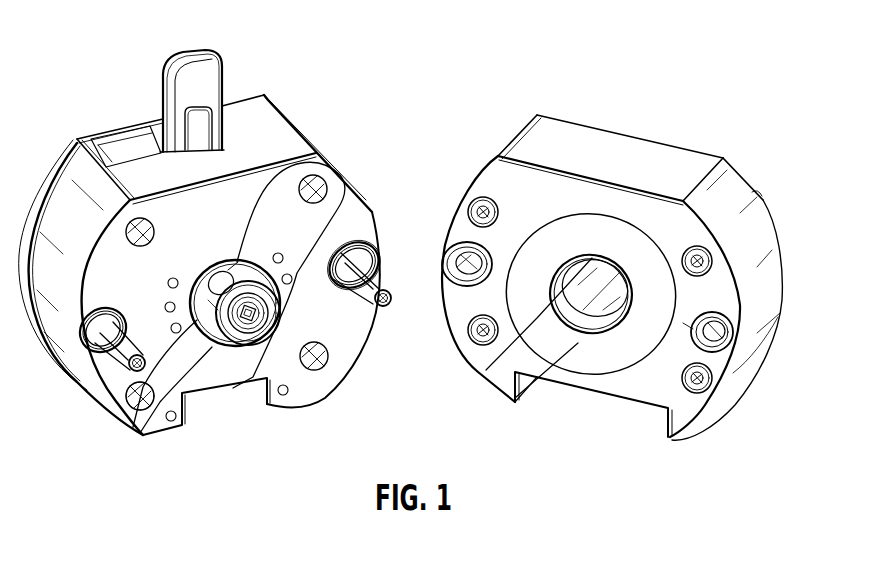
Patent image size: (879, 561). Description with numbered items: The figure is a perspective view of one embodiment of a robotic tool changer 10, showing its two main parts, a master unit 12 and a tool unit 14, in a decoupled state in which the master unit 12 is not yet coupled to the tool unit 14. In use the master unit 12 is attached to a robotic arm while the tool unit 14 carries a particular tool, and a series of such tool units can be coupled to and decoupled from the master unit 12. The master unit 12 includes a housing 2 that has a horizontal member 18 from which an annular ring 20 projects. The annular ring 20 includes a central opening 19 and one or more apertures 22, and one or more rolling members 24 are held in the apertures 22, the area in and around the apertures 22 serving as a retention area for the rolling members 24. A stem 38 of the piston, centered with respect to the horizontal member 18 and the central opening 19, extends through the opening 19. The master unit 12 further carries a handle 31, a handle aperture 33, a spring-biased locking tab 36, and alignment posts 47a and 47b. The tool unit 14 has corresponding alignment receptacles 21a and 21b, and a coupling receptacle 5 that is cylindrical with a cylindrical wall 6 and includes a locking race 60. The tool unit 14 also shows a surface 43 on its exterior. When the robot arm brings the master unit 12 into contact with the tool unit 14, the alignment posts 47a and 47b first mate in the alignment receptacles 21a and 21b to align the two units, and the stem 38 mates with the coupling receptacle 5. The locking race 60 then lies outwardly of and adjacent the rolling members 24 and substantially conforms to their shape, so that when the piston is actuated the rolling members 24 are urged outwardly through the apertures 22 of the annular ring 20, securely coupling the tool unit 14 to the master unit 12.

The robotic tool changer 10 is at (421, 12).
The master unit 12 is at (96, 80).
The tool unit 14 is at (693, 79).
The housing 2 is at (290, 140).
The apertures 22 is at (318, 156).
The handle aperture 33 is at (123, 144).
The handle 31 is at (214, 62).
The spring-biased locking tab 36 is at (200, 130).
The horizontal member 18 is at (356, 230).
The rolling members 24 is at (205, 317).
The central opening 19 is at (250, 332).
The stem 38 is at (231, 263).
The alignment post 47b is at (371, 282).
The alignment receptacle 21b is at (395, 286).
The alignment post 47a is at (123, 353).
The annular ring 20 is at (133, 407).
The facet surface 43 is at (690, 160).
The coupling receptacle 5 is at (597, 308).
The locking race 60 is at (537, 318).
The cylindrical wall 6 is at (512, 384).
The alignment receptacle 21a is at (722, 331).